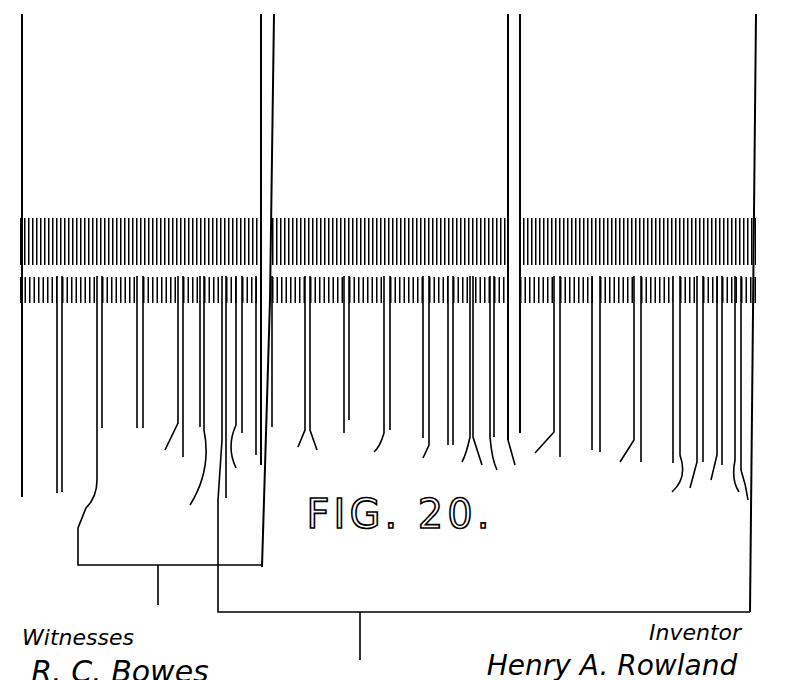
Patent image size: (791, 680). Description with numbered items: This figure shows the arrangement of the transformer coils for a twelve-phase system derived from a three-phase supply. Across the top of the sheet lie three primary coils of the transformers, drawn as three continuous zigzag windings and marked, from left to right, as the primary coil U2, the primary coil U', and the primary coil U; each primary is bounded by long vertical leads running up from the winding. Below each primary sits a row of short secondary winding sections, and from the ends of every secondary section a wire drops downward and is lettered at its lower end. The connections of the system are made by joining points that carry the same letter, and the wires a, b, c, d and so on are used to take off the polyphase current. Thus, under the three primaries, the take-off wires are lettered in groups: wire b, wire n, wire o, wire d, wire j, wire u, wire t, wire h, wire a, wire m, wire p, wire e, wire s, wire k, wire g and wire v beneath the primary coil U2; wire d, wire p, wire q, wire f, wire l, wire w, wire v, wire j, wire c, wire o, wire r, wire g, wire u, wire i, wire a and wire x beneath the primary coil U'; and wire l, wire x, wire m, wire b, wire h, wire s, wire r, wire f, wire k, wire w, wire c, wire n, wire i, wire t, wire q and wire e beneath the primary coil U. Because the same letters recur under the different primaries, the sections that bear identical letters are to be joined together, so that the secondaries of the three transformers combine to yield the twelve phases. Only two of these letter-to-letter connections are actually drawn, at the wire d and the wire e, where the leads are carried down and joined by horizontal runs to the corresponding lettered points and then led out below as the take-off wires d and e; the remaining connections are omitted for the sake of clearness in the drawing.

The primary coil U2 is at (139, 211).
The primary coil U' is at (390, 211).
The primary coil U is at (637, 211).
The wire a is at (343, 379).
The wire b is at (301, 270).
The wire c is at (564, 380).
The wire d is at (181, 456).
The wire e is at (485, 347).
The wire f is at (500, 385).
The wire g is at (355, 386).
The wire h is at (384, 379).
The wire i is at (603, 393).
The wire j is at (262, 368).
The wire k is at (457, 403).
The wire l is at (440, 362).
The wire m is at (375, 377).
The wire n is at (368, 396).
The wire o is at (253, 395).
The wire p is at (239, 401).
The wire q is at (528, 397).
The wire r is at (550, 382).
The wire s is at (429, 400).
The wire t is at (436, 388).
The wire u is at (308, 385).
The wire v is at (329, 376).
The wire w is at (531, 381).
The wire x is at (531, 247).